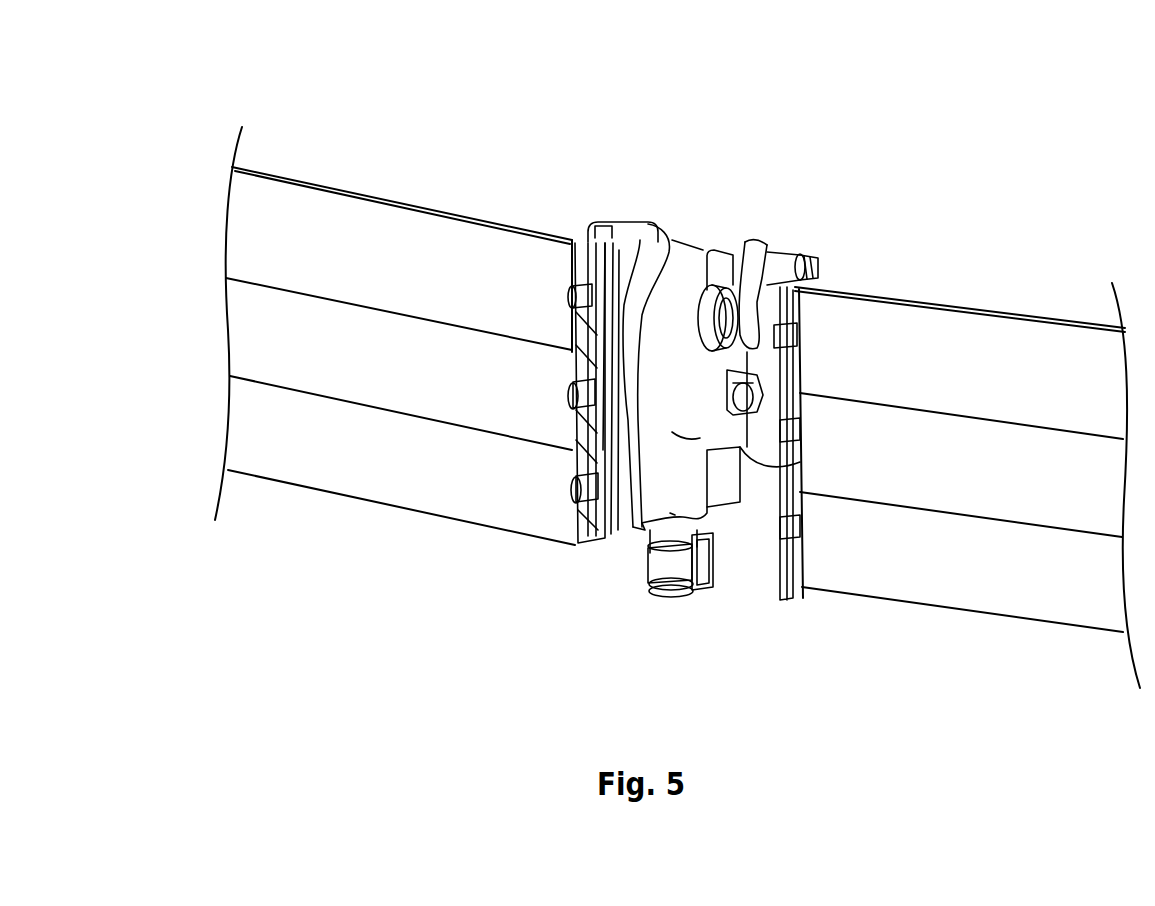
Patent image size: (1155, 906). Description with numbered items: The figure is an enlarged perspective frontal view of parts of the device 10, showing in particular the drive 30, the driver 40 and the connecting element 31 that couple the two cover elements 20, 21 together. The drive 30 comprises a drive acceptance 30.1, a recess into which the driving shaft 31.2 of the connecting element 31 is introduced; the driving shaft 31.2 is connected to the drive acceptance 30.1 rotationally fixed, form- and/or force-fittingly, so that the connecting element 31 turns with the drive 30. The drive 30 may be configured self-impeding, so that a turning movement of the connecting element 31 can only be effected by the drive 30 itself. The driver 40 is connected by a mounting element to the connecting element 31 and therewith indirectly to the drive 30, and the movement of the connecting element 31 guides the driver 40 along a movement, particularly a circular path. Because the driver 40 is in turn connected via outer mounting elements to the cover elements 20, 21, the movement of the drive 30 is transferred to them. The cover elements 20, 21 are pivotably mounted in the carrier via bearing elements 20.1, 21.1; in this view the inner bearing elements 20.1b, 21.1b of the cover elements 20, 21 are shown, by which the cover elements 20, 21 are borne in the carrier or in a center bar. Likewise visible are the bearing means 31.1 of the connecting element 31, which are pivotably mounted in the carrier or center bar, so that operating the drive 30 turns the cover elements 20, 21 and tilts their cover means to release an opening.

The device 10 is at (923, 120).
The cover element 20 is at (994, 363).
The bearing element 20.1 is at (852, 501).
The inner bearing element 20.1b is at (800, 537).
The cover element 21 is at (310, 237).
The bearing element 21.1 is at (579, 322).
The inner bearing element 21.1b is at (578, 260).
The drive 30 is at (668, 460).
The drive acceptance 30.1 is at (704, 253).
The connecting element 31 is at (640, 222).
The bearing means 31.1 is at (735, 333).
The driving shaft 31.2 is at (720, 296).
The driver 40 is at (763, 437).